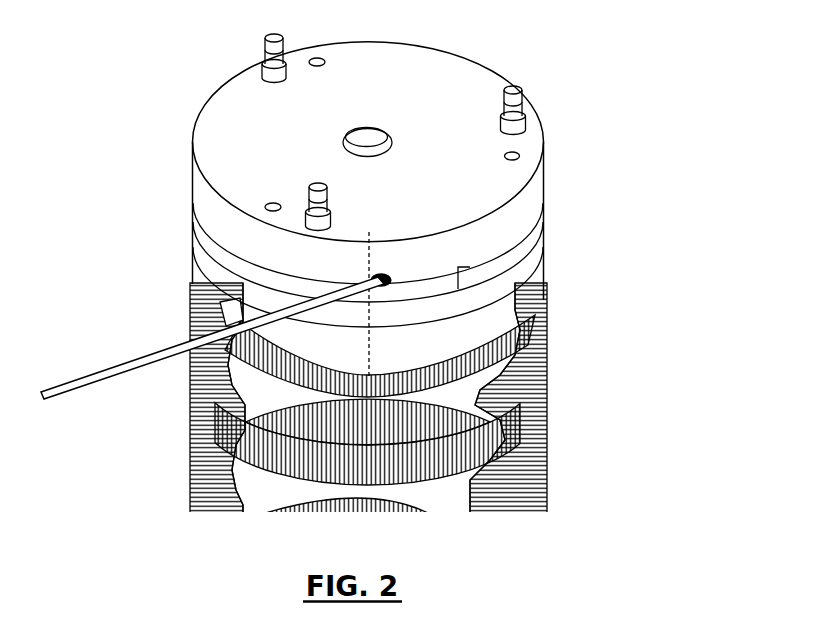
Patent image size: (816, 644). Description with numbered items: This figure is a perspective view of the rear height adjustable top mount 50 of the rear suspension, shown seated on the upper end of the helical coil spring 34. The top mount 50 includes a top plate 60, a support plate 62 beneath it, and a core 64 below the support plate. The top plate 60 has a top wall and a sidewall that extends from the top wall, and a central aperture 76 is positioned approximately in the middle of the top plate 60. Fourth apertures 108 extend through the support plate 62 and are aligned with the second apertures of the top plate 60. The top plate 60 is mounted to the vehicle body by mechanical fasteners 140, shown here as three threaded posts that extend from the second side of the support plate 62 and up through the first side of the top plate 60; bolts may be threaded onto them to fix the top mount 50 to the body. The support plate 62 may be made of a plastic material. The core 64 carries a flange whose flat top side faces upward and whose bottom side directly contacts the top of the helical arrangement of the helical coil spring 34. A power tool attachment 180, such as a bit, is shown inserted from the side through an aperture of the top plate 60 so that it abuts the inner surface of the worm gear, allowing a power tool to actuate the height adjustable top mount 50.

The helical coil spring 34 is at (547, 443).
The rear height adjustable top mount 50 is at (333, 258).
The top plate 60 is at (226, 123).
The support plate 62 is at (195, 218).
The core 64 is at (541, 264).
The central aperture 76 is at (365, 140).
The fourth apertures 108 is at (318, 58).
The mechanical fasteners 140 is at (522, 97).
The power tool attachment 180 is at (147, 352).